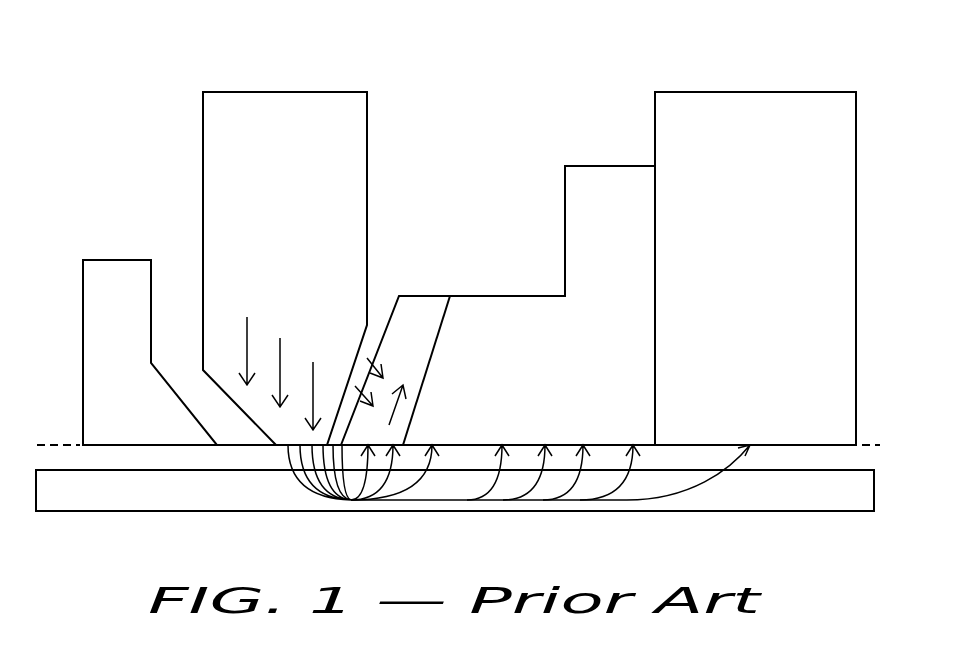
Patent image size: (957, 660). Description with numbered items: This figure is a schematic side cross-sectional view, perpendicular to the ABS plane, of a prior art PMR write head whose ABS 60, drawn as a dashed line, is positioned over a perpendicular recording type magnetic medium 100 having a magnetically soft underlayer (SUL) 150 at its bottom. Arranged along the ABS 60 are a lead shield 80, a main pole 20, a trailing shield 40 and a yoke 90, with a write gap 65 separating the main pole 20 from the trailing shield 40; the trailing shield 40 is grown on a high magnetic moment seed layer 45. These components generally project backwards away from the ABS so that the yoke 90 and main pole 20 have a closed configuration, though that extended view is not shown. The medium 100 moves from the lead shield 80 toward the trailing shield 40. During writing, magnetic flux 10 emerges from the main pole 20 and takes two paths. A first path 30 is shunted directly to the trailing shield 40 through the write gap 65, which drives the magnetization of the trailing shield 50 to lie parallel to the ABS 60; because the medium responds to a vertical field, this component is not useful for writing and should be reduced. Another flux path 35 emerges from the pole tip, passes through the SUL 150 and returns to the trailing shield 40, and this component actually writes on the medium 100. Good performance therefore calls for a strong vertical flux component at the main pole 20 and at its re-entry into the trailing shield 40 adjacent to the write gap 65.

The magnetic flux 10 is at (252, 335).
The main pole 20 is at (352, 119).
The first path 30 is at (347, 428).
The another flux path 35 is at (410, 490).
The trailing shield 40 is at (504, 310).
The high magnetic moment seed layer 45 is at (418, 310).
The magnetization of the trailing shield 50 is at (395, 408).
The ABS 60 is at (45, 445).
The write gap 65 is at (352, 502).
The lead shield 80 is at (113, 273).
The yoke 90 is at (663, 119).
The magnetic medium 100 is at (70, 468).
The soft underlayer (SUL) 150 is at (117, 500).